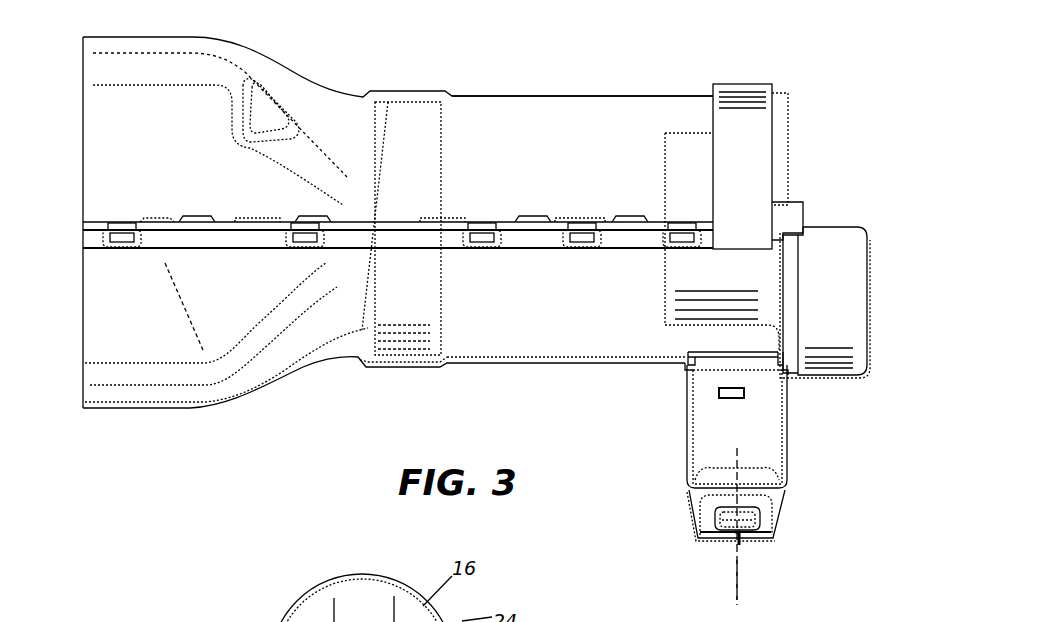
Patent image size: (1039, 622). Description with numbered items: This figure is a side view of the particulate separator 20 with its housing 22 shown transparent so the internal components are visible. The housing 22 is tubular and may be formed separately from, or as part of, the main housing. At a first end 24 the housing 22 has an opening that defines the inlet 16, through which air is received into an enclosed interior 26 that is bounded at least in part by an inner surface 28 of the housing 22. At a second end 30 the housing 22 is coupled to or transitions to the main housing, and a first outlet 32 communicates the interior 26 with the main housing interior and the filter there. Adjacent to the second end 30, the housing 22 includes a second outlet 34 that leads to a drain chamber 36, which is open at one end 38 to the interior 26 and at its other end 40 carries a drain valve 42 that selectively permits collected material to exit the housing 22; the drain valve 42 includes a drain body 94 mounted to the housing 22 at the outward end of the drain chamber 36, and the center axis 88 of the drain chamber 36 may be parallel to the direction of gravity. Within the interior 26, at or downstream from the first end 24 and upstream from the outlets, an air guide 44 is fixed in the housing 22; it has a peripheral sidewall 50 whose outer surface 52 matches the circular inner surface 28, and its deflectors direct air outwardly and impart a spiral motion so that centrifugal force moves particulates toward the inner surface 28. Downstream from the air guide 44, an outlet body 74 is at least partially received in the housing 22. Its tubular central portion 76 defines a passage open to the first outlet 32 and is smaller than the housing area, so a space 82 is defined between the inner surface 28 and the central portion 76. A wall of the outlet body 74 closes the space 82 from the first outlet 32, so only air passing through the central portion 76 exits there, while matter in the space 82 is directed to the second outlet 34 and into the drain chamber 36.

The inlet 16 is at (64, 193).
The particulate separator 20 is at (840, 66).
The housing 22 is at (565, 112).
The first end 24 is at (83, 104).
The interior 26 is at (552, 320).
The inner surface 28 is at (488, 352).
The second end 30 is at (787, 162).
The first outlet 32 is at (802, 190).
The second outlet 34 is at (786, 370).
The drain chamber 36 is at (760, 435).
The one end 38 is at (712, 375).
The other end 40 is at (775, 488).
The drain valve 42 is at (772, 548).
The air guide 44 is at (453, 185).
The peripheral sidewall 50 is at (453, 202).
The outer surface 52 is at (425, 130).
The outlet body 74 is at (655, 276).
The central portion 76 is at (670, 183).
The space 82 is at (686, 108).
The center axis 88 is at (735, 578).
The drain body 94 is at (705, 512).